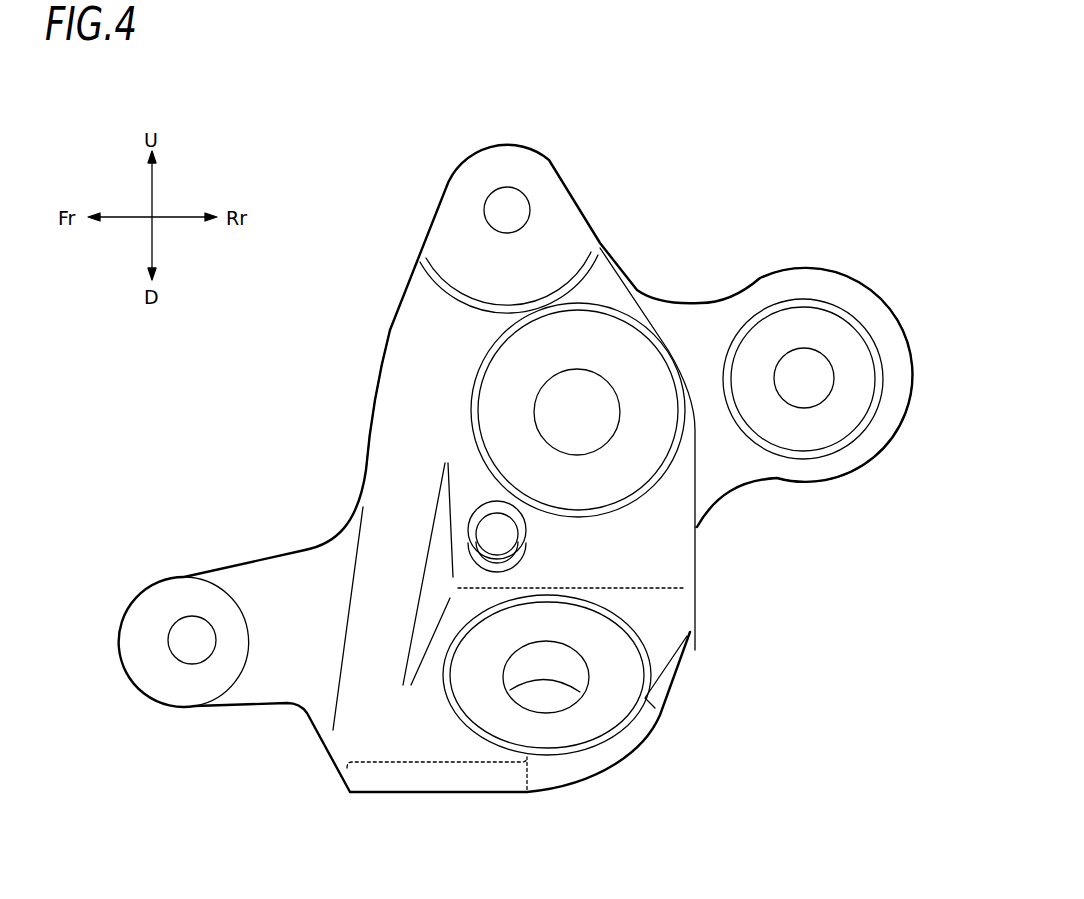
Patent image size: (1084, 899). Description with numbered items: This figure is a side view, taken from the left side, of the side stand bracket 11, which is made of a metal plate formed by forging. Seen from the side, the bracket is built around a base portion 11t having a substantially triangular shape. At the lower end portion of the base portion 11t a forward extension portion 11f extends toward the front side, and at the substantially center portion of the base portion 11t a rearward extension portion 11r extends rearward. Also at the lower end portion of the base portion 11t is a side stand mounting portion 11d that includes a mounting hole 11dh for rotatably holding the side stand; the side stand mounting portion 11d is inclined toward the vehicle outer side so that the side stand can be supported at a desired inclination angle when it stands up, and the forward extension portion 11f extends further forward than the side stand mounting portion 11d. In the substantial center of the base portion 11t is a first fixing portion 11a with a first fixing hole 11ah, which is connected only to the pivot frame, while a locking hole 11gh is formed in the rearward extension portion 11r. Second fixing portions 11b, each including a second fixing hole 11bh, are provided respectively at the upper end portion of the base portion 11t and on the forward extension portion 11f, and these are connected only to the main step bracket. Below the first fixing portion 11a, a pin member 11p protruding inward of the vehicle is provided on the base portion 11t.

The side stand bracket 11 is at (612, 168).
The first fixing portion 11a is at (655, 405).
The first fixing hole 11ah is at (590, 445).
The second fixing portion 11b is at (516, 167).
The second fixing hole 11bh is at (494, 200).
The side stand mounting portion 11d is at (548, 737).
The mounting hole 11dh is at (582, 680).
The forward extension portion 11f is at (256, 705).
The locking hole 11gh is at (800, 356).
The pin member 11p is at (497, 535).
The rearward extension portion 11r is at (886, 308).
The base portion 11t is at (420, 397).